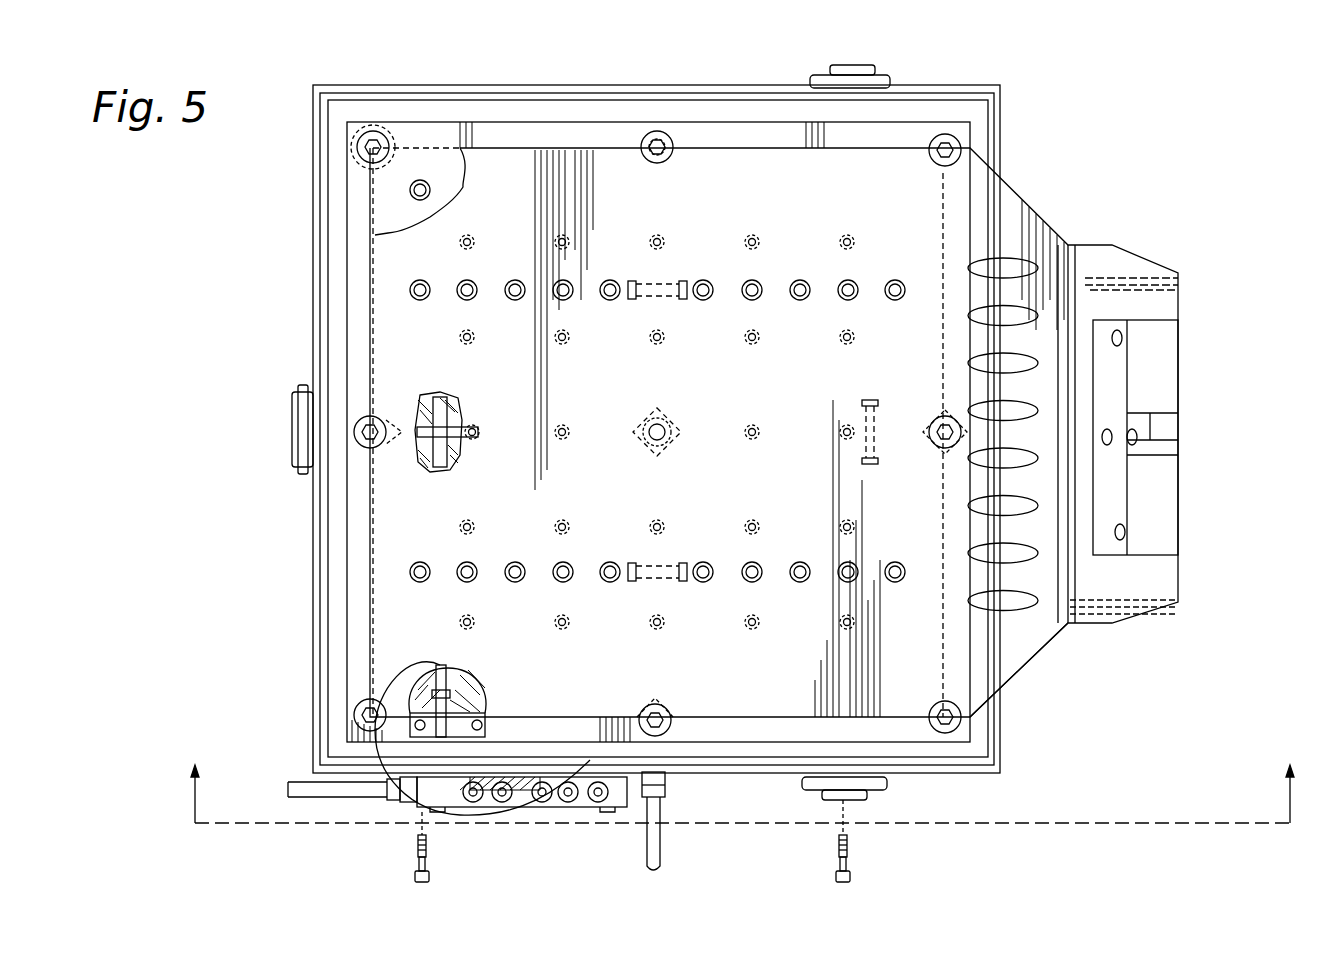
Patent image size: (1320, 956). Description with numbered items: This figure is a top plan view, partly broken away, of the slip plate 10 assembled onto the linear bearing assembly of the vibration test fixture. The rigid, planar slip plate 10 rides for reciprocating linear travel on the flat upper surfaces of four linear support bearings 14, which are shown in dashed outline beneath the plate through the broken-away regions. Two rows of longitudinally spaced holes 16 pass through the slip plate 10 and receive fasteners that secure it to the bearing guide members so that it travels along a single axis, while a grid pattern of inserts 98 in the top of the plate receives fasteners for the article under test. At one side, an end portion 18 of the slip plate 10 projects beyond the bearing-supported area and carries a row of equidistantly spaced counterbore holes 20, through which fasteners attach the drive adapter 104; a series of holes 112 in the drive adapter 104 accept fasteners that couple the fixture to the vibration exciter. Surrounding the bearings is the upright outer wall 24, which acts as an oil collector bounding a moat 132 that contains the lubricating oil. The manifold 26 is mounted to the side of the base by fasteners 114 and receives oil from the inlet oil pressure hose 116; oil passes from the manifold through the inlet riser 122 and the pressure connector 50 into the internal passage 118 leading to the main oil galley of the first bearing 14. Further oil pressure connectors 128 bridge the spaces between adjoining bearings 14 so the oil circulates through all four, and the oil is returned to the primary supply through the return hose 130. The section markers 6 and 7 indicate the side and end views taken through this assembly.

The slip plate 10 is at (512, 182).
The linear support bearing 14 is at (410, 158).
The holes 16 is at (558, 285).
The end portion 18 is at (1010, 660).
The holes 20 is at (968, 362).
The outer wall 24 is at (775, 118).
The manifold 26 is at (560, 808).
The pressure connector 50 is at (445, 660).
The inserts 98 is at (555, 432).
The drive adapter 104 is at (1110, 603).
The holes 112 is at (1134, 430).
The fasteners 114 is at (415, 842).
The inlet oil pressure hose 116 is at (292, 778).
The internal passage 118 is at (452, 690).
The inlet riser 122 is at (500, 710).
The oil pressure connectors 128 is at (672, 283).
The return hose 130 is at (650, 845).
The moat 132 is at (362, 280).
The section line 6- 6 is at (741, 778).
The section indicator 7 is at (509, 729).